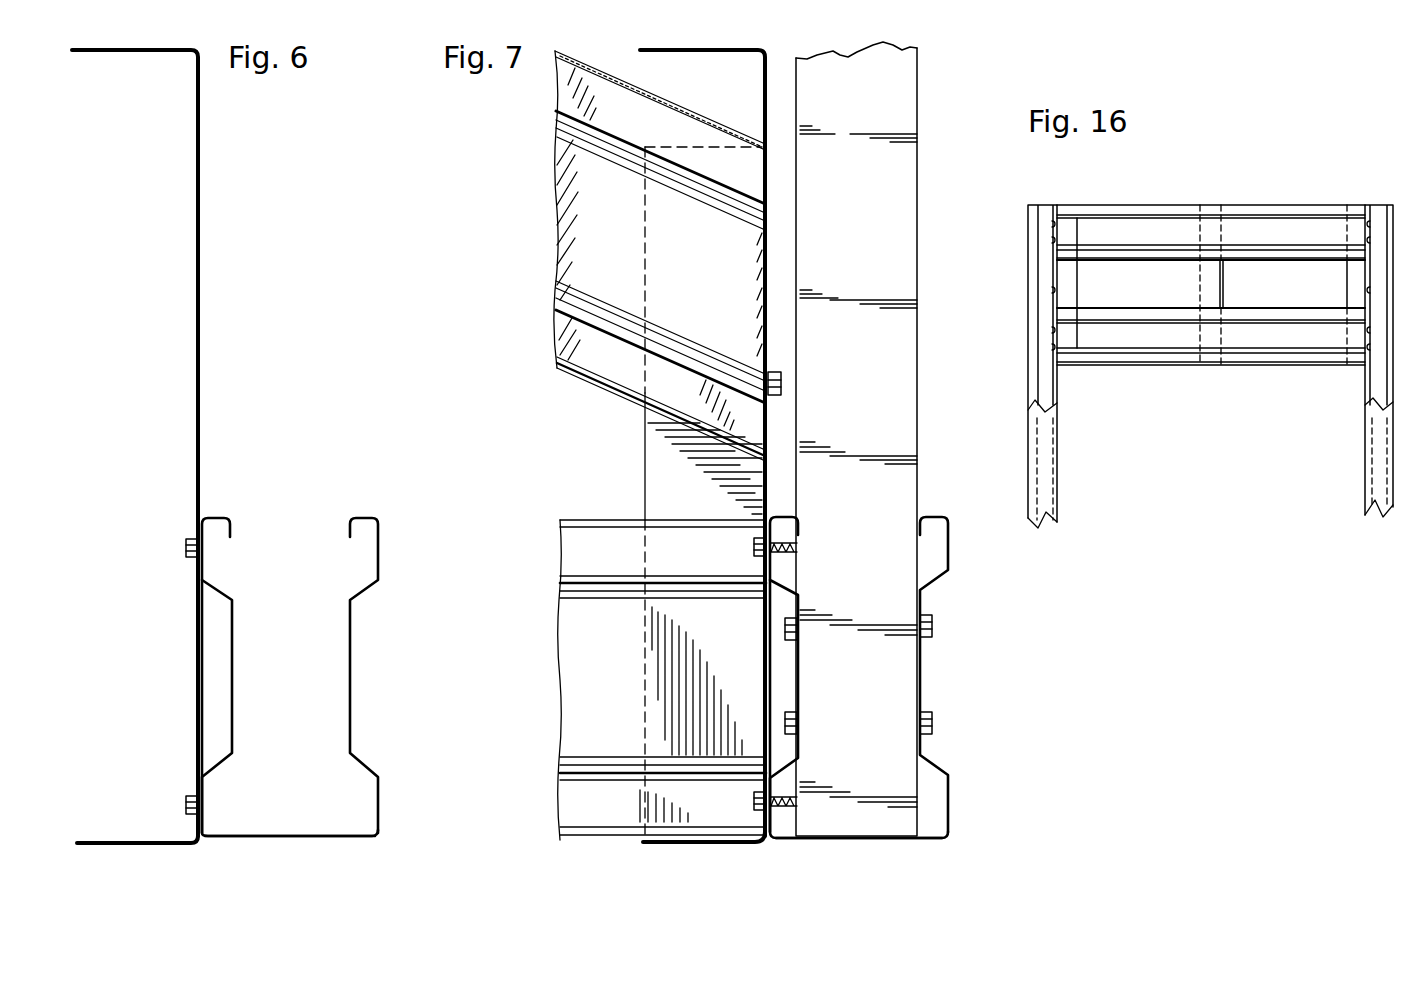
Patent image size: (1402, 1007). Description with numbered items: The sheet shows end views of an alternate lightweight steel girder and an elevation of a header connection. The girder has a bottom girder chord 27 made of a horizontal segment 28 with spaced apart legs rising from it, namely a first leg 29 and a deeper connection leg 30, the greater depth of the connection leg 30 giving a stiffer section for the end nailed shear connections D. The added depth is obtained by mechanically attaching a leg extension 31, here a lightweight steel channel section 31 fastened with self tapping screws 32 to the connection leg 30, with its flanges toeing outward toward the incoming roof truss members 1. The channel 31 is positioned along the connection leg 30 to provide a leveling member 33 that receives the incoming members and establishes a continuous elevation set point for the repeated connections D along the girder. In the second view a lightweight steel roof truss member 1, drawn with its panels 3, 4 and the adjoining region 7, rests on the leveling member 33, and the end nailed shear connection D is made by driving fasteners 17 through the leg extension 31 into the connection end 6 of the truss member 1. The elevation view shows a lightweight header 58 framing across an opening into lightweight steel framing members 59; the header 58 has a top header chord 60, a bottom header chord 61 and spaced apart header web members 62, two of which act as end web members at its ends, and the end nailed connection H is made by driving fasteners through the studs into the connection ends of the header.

In FIG. 7, the lightweight steel roof truss member 1 is at (512, 171).
In FIG. 7, the upper shelf panel 3 is at (580, 238).
In FIG. 7, the lower shelf panel 4 is at (575, 800).
In FIG. 7, the connection end 6 is at (772, 492).
In FIG. 7, the gap shading / edge 7 is at (657, 482).
In FIG. 7, the fasteners 17 is at (782, 393).
In FIG. 6, the bottom girder chord 27 is at (366, 680).
In FIG. 7, the bottom girder chord 27 is at (937, 603).
In FIG. 6, the horizontal segment 28 is at (290, 845).
In FIG. 7, the horizontal segment 28 is at (932, 840).
In FIG. 6, the first leg 29 is at (353, 628).
In FIG. 7, the first leg 29 is at (927, 686).
In FIG. 6, the connection leg 30 is at (233, 643).
In FIG. 7, the connection leg 30 is at (797, 690).
In FIG. 6, the leg extension 31 is at (202, 273).
In FIG. 7, the leg extension 31 is at (770, 58).
In FIG. 6, the self tapping screws 32 is at (185, 547).
In FIG. 7, the self tapping screws 32 is at (752, 548).
In FIG. 6, the leveling member 33 is at (115, 840).
In FIG. 7, the leveling member 33 is at (687, 843).
In FIG. 16, the lightweight header 58 is at (1177, 372).
In FIG. 16, the lightweight steel framing members 59 is at (1048, 472).
In FIG. 16, the top header chord 60 is at (1168, 232).
In FIG. 16, the bottom header chord 61 is at (1243, 360).
In FIG. 16, the header web members 62 is at (1066, 273).
In FIG. 7, the end nailed shear connection D is at (980, 730).
In FIG. 16, the end nailed shear connection H is at (1068, 234).